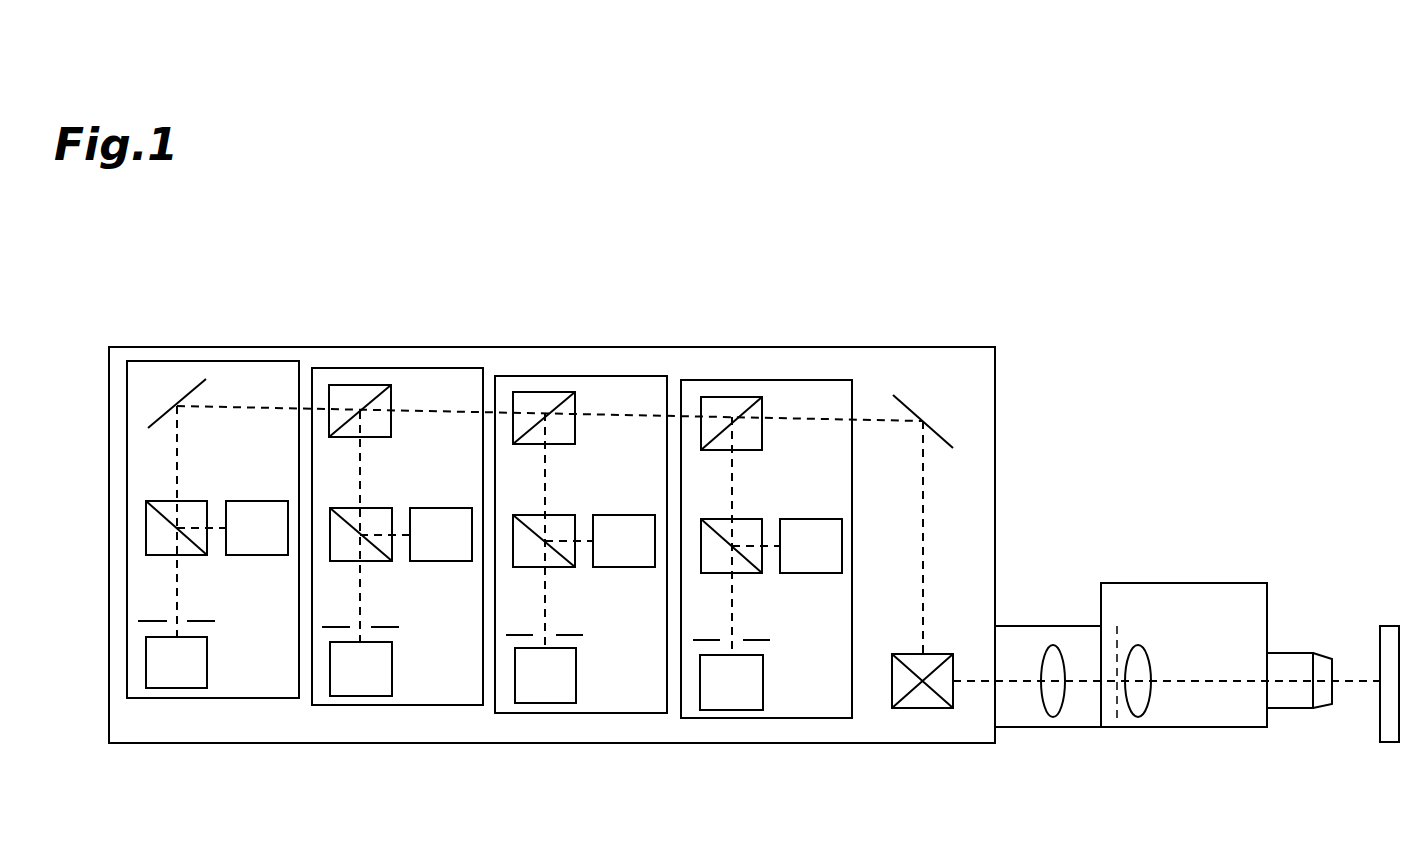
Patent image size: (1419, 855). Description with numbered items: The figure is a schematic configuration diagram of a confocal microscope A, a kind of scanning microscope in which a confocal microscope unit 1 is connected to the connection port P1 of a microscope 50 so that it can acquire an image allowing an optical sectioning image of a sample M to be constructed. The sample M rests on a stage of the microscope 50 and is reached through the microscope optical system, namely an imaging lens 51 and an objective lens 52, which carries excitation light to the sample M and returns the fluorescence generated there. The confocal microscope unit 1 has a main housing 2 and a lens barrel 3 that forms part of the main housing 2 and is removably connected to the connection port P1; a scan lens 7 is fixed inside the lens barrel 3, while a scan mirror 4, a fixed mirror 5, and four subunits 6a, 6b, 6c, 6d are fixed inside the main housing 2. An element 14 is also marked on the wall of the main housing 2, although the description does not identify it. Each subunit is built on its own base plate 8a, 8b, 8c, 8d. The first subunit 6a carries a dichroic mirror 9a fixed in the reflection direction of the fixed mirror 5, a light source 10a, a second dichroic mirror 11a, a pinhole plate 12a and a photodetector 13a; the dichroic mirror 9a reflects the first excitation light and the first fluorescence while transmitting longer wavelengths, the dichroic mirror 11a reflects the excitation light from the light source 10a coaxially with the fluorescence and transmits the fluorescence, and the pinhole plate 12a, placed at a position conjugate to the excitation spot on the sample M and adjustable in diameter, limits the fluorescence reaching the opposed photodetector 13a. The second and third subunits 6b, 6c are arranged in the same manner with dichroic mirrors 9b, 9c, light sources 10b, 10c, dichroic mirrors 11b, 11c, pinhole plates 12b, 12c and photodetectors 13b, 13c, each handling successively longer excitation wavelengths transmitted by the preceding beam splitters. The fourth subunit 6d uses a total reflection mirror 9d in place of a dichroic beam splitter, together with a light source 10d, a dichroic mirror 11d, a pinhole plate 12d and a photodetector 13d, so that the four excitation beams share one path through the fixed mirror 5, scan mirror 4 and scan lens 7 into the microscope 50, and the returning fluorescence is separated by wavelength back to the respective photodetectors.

The confocal microscope unit 1 is at (552, 508).
The main housing 2 is at (898, 347).
The lens barrel 3 is at (1048, 626).
The scan mirror 4 is at (922, 708).
The fixed mirror 5 is at (915, 415).
The first subunit 6a is at (837, 720).
The second subunit 6b is at (646, 715).
The third subunit 6c is at (463, 707).
The fourth subunit 6d is at (275, 700).
The scan lens 7 is at (1050, 717).
The base plate 8a is at (797, 707).
The base plate 8b is at (610, 705).
The base plate 8c is at (424, 700).
The base plate 8d is at (238, 690).
The dichroic mirror 9a is at (737, 397).
The dichroic mirror 9b is at (550, 392).
The dichroic mirror 9c is at (363, 385).
The total reflection mirror 9d is at (185, 397).
The light source 10a is at (812, 519).
The light source 10b is at (625, 515).
The light source 10c is at (440, 508).
The light source 10d is at (252, 501).
The dichroic mirror 11a is at (757, 519).
The dichroic mirror 11b is at (570, 515).
The dichroic mirror 11c is at (383, 508).
The dichroic mirror 11d is at (191, 501).
The pinhole plate 12a is at (697, 642).
The pinhole plate 12b is at (513, 637).
The pinhole plate 12c is at (333, 629).
The pinhole plate 12d is at (143, 623).
The photodetector 13a is at (738, 710).
The photodetector 13b is at (550, 704).
The photodetector 13c is at (365, 696).
The photodetector 13d is at (177, 688).
The emission window 14 is at (982, 397).
The microscope 50 is at (1213, 583).
The imaging lens 51 is at (1135, 717).
The objective lens 52 is at (1293, 653).
The confocal microscope A is at (1158, 388).
The sample M is at (1390, 626).
The connection port P1 is at (1120, 637).